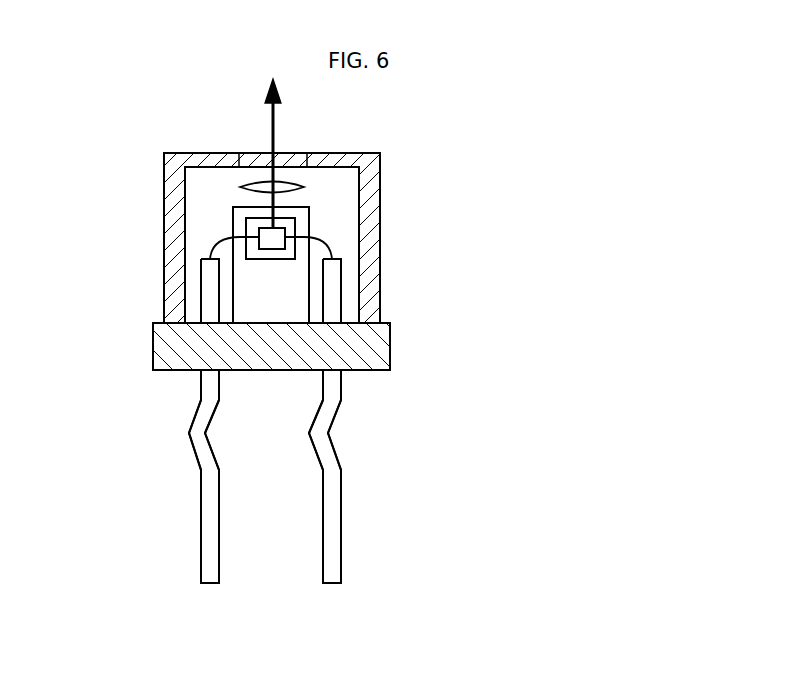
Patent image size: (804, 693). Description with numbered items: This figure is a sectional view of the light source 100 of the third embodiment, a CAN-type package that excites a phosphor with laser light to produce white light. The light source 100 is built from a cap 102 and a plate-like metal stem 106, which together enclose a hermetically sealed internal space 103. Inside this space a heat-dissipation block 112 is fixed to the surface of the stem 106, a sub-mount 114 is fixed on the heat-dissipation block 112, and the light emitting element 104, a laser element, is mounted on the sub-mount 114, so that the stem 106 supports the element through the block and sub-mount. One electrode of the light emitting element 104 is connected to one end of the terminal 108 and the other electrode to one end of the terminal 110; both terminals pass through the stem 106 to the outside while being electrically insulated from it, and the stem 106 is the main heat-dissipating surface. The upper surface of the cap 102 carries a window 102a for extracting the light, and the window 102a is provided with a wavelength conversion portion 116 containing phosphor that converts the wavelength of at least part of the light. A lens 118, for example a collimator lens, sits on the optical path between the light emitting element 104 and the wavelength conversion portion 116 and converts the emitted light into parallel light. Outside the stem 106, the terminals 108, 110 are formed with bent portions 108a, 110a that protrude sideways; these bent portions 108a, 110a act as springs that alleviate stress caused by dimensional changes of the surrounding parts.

The light source 100 is at (292, 672).
The cap 102 is at (365, 288).
The window 102a is at (292, 160).
The internal space 103 is at (342, 202).
The light emitting element 104 is at (288, 236).
The stem 106 is at (390, 353).
The terminal 108 is at (341, 559).
The bent portion 108a is at (333, 445).
The terminal 110 is at (201, 556).
The bent portion 110a is at (193, 460).
The heat-dissipation block 112 is at (263, 296).
The sub-mount 114 is at (250, 222).
The wavelength conversion portion 116 is at (262, 157).
The lens 118 is at (250, 178).